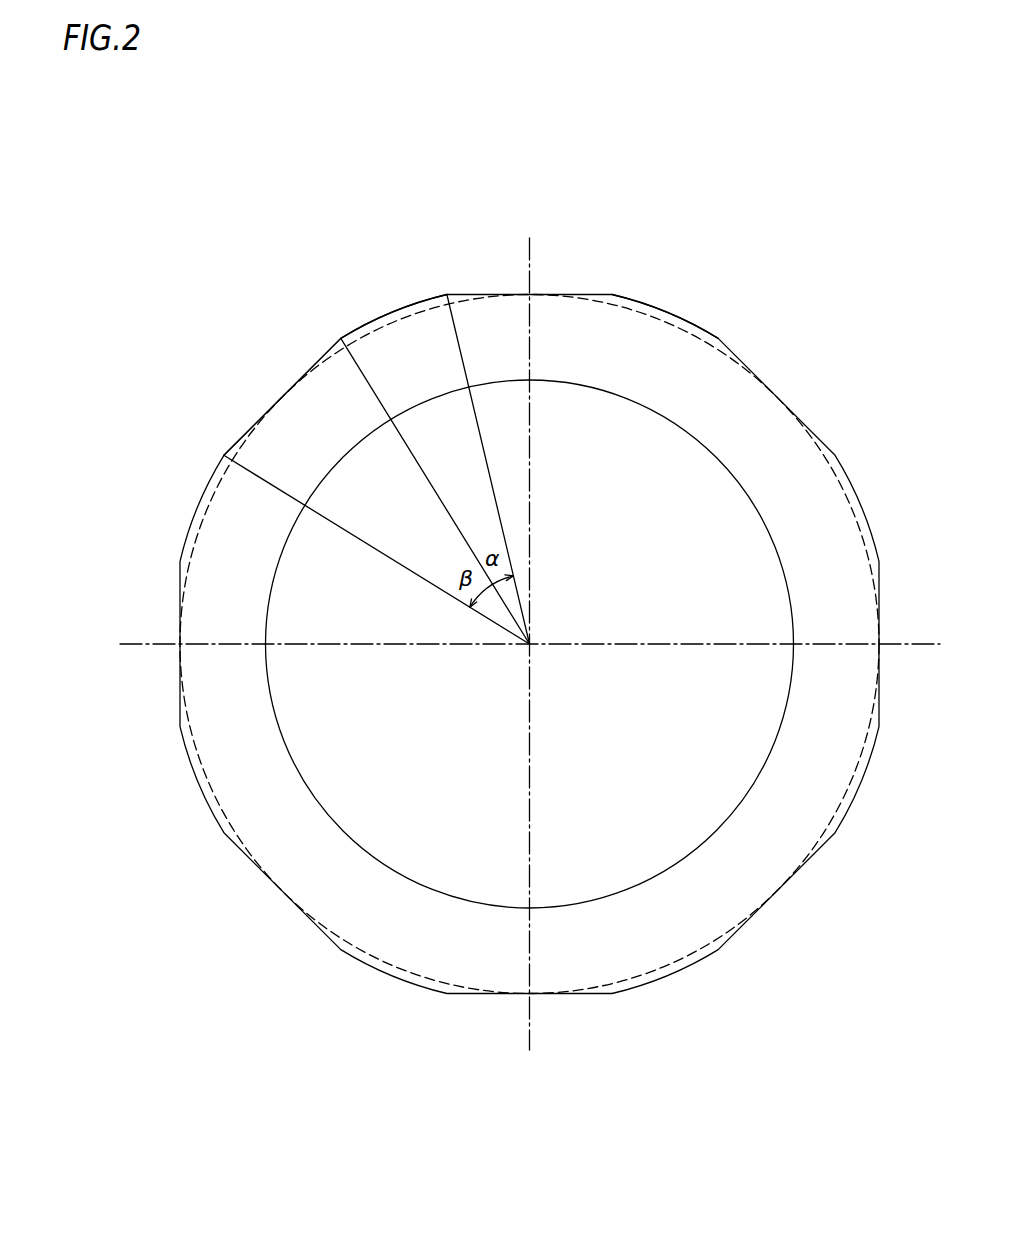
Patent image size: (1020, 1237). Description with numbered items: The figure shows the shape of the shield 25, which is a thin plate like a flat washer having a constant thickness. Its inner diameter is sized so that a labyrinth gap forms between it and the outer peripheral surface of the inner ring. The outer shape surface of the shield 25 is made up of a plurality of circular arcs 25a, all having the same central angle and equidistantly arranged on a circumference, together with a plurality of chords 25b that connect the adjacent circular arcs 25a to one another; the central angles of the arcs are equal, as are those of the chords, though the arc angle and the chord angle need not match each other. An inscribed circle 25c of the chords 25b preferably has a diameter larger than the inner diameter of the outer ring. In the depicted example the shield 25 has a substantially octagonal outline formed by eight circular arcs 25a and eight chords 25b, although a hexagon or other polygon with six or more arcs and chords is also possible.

The shield 25 is at (845, 244).
The circular arc 25a is at (380, 308).
The chord 25b is at (264, 415).
The inscribed circle 25c is at (692, 331).